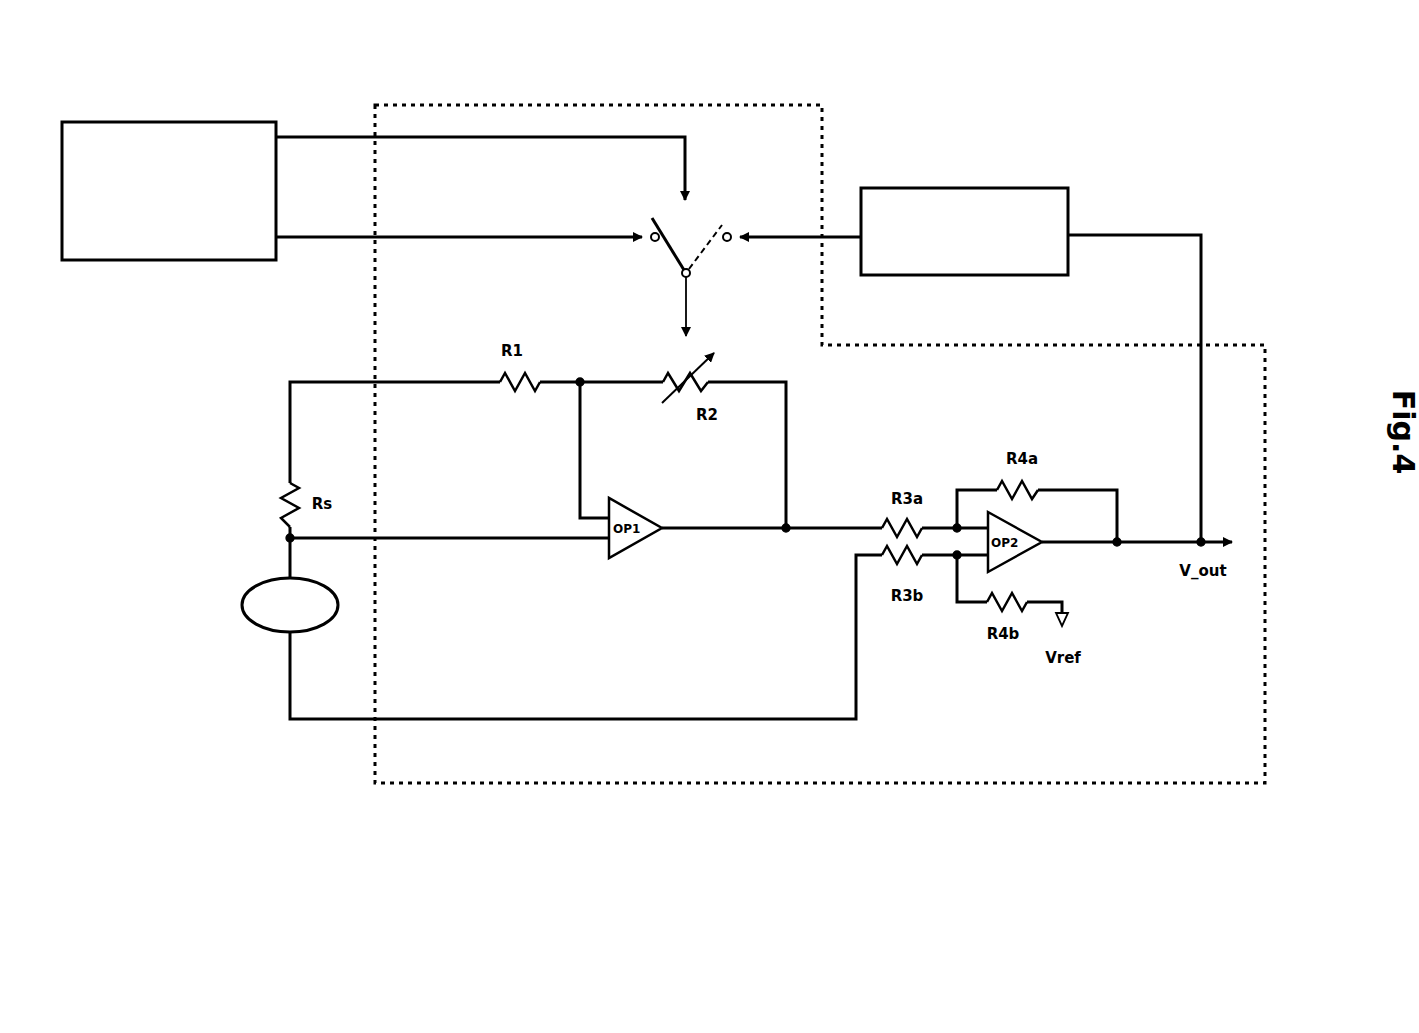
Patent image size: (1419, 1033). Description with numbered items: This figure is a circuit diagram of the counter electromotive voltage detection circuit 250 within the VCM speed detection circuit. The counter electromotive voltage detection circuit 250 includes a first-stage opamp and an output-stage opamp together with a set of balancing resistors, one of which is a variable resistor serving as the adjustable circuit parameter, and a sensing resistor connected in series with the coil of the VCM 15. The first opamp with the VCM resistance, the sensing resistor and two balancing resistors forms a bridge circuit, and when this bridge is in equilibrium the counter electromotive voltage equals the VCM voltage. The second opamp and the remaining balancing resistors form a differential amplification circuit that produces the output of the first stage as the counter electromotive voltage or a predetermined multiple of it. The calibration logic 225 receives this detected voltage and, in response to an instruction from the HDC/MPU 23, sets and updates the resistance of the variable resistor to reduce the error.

The HDC/MPU 23 is at (175, 260).
The counter electromotive voltage detection circuit 250 is at (822, 133).
The calibration logic 225 is at (974, 275).
The VCM 15 is at (265, 634).